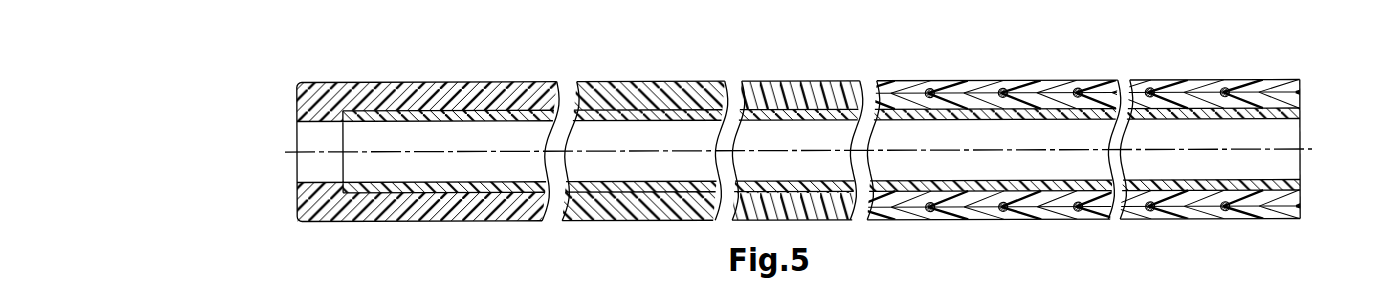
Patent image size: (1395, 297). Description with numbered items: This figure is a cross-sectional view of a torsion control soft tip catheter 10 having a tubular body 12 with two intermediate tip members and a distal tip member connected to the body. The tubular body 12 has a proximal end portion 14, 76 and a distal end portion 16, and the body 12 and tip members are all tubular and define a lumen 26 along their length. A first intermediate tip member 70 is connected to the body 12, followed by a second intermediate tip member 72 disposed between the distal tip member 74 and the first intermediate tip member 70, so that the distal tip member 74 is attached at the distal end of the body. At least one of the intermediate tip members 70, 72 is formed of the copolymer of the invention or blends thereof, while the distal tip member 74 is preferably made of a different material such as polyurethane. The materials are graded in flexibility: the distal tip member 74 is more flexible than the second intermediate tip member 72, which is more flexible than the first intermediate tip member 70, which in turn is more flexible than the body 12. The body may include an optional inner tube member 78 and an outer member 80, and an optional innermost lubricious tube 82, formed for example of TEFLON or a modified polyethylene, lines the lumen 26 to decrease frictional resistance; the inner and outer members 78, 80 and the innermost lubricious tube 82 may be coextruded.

The torsion control soft tip catheter 10 is at (955, 68).
The tubular body 12 is at (1057, 81).
The proximal end portion 14 is at (1250, 80).
The distal end portion 16 is at (360, 81).
The lumen 26 is at (1312, 125).
The first intermediate tip member 70 is at (806, 81).
The second intermediate tip member 72 is at (654, 81).
The distal tip member 74 is at (428, 81).
The proximal end portion 76 is at (1292, 79).
The inner tube member 78 is at (908, 80).
The outer member 80 is at (1157, 92).
The innermost lubricious tube 82 is at (612, 113).